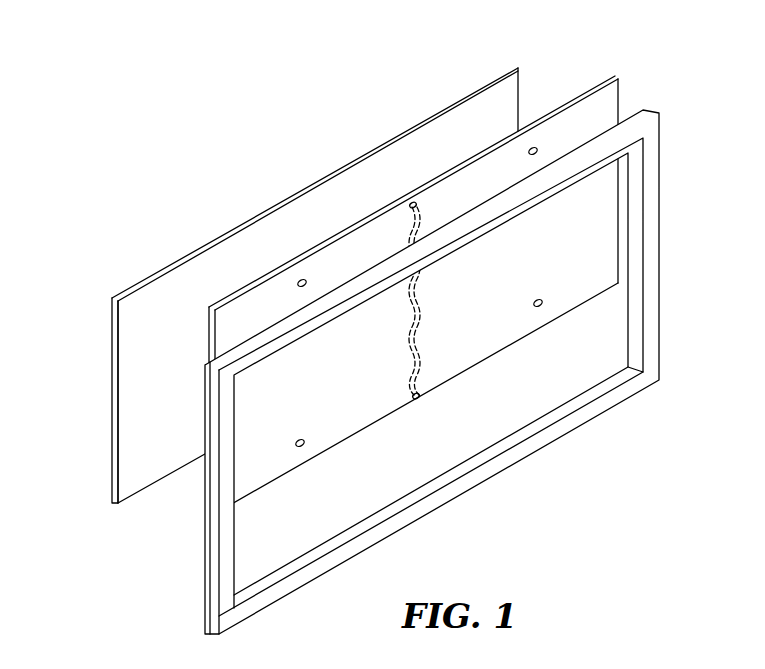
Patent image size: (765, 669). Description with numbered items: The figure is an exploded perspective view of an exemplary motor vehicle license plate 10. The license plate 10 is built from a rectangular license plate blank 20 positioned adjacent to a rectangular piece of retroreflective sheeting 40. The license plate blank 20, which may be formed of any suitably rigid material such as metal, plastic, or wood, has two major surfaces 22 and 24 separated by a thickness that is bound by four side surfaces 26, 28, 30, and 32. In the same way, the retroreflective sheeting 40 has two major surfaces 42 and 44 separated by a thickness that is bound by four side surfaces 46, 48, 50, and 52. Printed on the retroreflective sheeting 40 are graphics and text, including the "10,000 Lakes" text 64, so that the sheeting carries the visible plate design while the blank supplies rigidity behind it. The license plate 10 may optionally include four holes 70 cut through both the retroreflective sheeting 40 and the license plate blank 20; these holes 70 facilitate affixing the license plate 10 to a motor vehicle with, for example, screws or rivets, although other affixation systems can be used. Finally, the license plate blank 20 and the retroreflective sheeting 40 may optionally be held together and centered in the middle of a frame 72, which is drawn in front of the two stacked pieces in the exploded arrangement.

The license plate 10 is at (235, 93).
The license plate blank 20 is at (373, 136).
The major surface 22 is at (497, 92).
The major surface 24 is at (303, 190).
The side surface 26 is at (258, 213).
The side surface 28 is at (522, 86).
The side surface 30 is at (166, 479).
The side surface 32 is at (111, 454).
The retroreflective sheeting 40 is at (590, 81).
The major surface 42 is at (606, 96).
The major surface 44 is at (532, 125).
The side surface 46 is at (572, 100).
The side surface 48 is at (617, 90).
The side surface 50 is at (492, 358).
The side surface 52 is at (213, 337).
The "10,000 Lakes" text 64 is at (423, 392).
The holes 70 is at (297, 284).
The frame 72 is at (464, 485).